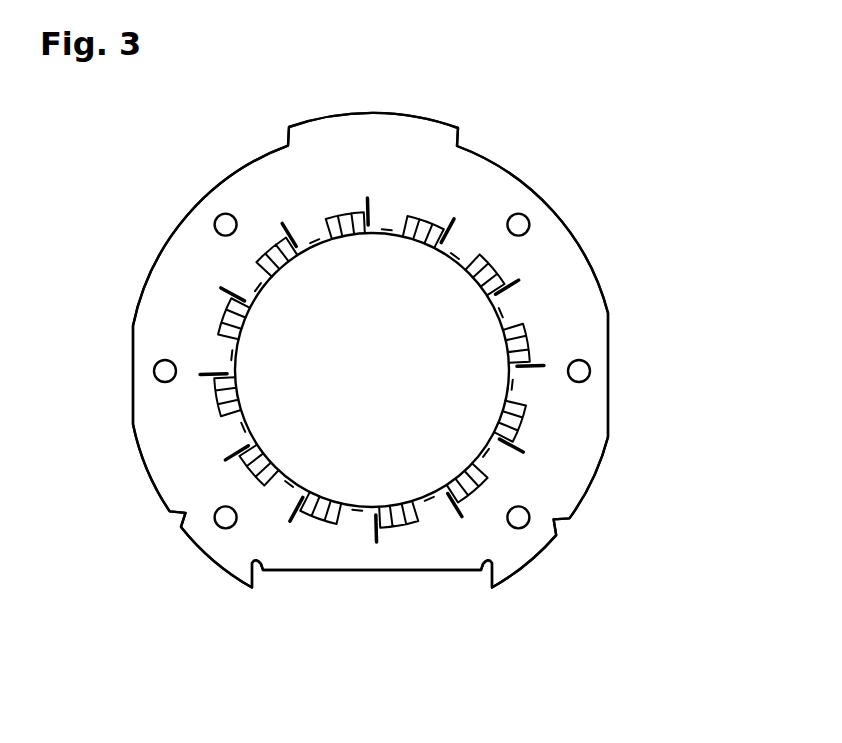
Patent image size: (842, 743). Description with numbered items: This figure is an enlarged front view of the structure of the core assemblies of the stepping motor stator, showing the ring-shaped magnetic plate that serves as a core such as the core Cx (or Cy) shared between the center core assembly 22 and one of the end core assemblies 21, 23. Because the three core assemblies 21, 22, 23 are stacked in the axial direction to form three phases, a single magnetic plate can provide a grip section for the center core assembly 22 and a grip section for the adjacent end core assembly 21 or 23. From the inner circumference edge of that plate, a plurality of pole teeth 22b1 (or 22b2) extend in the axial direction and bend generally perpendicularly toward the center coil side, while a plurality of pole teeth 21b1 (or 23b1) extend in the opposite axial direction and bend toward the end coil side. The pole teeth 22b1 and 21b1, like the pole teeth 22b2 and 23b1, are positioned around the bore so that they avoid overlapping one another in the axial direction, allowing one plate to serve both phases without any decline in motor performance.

The end core assembly 21 is at (422, 350).
The center core assembly 22 is at (422, 350).
The end core assembly 23 is at (571, 222).
The core Cx is at (565, 284).
The pole teeth 21b1 is at (372, 370).
The pole teeth 23b1 is at (458, 255).
The pole teeth 22b1 is at (372, 370).
The pole teeth 22b2 is at (455, 315).